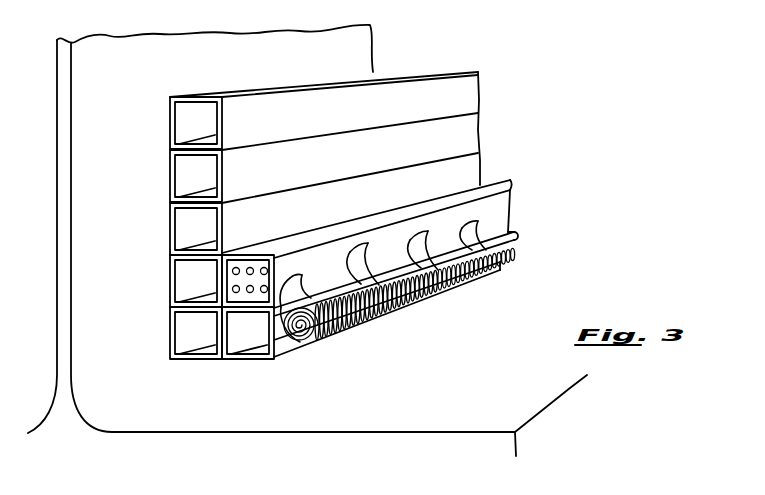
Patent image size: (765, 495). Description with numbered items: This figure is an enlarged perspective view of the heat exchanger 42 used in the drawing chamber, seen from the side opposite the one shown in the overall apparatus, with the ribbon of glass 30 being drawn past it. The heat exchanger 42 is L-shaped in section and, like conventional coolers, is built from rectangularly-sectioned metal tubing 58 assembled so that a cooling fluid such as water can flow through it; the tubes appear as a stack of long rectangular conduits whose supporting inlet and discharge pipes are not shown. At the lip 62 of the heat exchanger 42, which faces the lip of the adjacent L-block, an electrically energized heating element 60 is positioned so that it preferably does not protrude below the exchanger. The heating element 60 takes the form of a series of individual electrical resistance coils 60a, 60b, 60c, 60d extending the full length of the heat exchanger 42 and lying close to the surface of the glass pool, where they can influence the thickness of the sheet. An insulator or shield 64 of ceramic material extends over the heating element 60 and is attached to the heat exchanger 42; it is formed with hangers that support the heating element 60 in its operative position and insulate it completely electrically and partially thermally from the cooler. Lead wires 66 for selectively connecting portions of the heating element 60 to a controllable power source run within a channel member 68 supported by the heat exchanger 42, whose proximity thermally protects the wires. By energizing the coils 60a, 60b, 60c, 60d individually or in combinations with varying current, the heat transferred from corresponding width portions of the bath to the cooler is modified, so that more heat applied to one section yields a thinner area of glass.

The ribbon of glass 30 is at (74, 199).
The heat exchanger 42 is at (165, 125).
The rectangularly-sectioned metal tubing 58 is at (170, 245).
The heating element 60 is at (518, 247).
The resistance coil 60a is at (338, 322).
The resistance coil 60b is at (408, 301).
The resistance coil 60c is at (463, 278).
The resistance coil 60d is at (504, 280).
The lip 62 is at (285, 349).
The insulator or shield 64 is at (302, 277).
The lead wires 66 is at (357, 262).
The channel member 68 is at (256, 259).